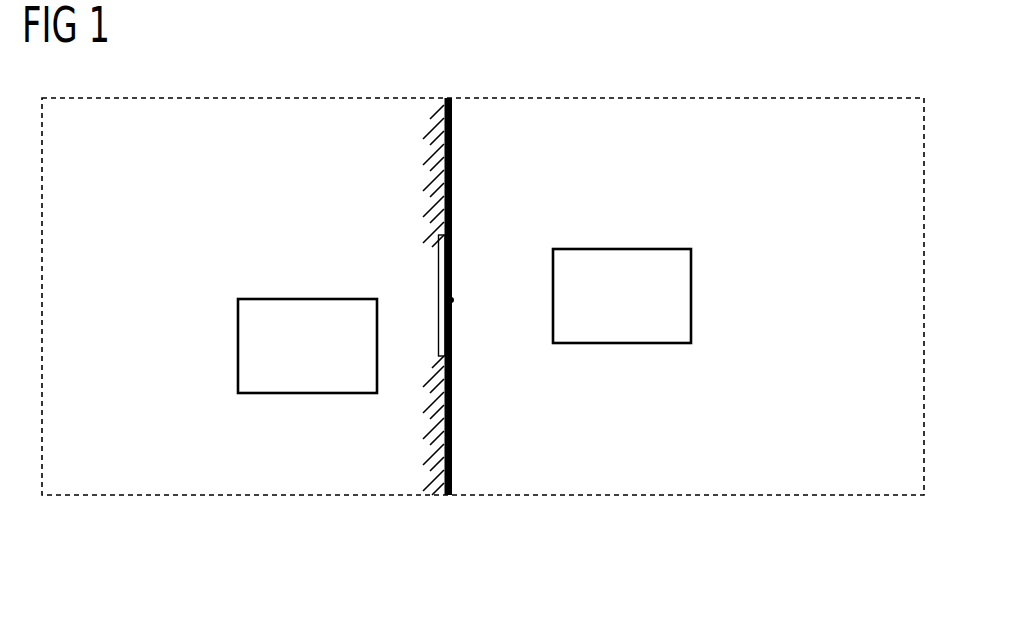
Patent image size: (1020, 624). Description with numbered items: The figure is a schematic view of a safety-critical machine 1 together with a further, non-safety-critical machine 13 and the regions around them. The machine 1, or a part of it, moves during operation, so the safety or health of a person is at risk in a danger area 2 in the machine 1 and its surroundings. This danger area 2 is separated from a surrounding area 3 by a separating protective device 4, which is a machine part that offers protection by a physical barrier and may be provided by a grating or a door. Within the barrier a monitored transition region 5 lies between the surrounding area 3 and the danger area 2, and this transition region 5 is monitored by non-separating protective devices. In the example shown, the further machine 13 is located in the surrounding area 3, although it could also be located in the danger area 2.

The safety-critical machine 1 is at (307, 298).
The danger area 2 is at (181, 313).
The surrounding area 3 is at (740, 313).
The separating protective device 4 is at (452, 183).
The monitored transition region 5 is at (452, 300).
The further non-safety-critical machine 13 is at (625, 248).